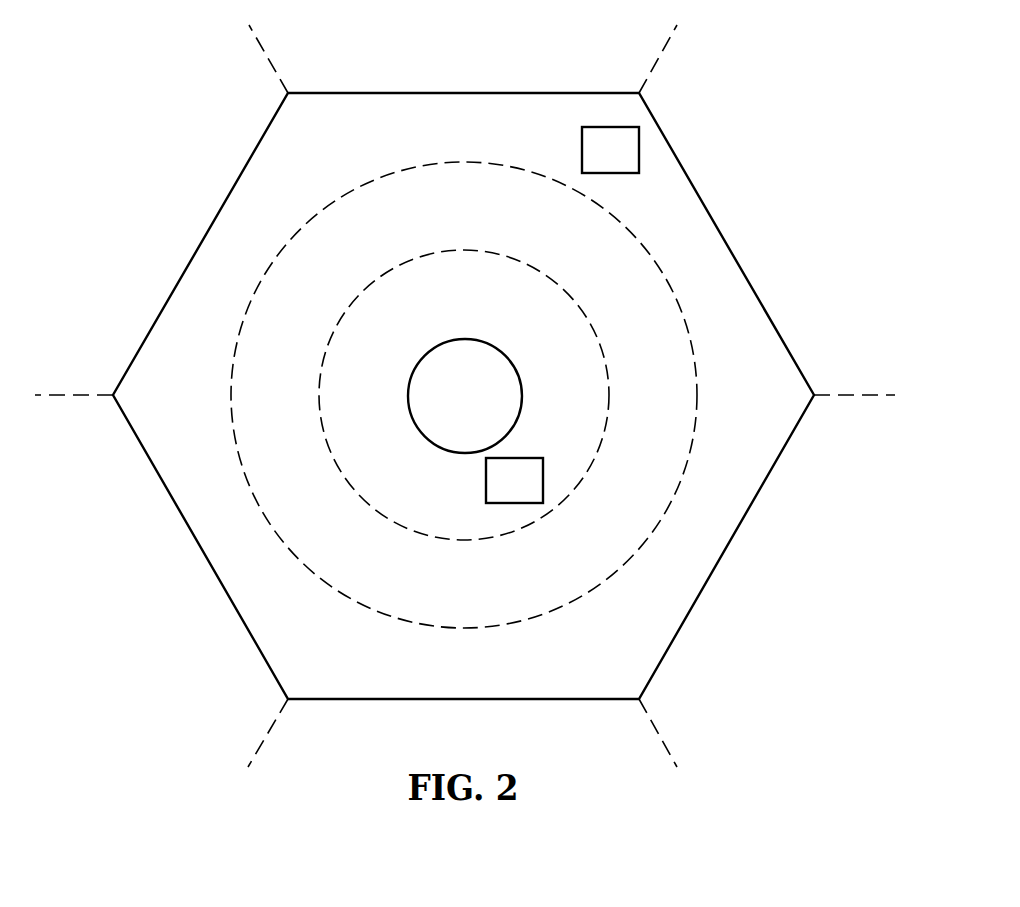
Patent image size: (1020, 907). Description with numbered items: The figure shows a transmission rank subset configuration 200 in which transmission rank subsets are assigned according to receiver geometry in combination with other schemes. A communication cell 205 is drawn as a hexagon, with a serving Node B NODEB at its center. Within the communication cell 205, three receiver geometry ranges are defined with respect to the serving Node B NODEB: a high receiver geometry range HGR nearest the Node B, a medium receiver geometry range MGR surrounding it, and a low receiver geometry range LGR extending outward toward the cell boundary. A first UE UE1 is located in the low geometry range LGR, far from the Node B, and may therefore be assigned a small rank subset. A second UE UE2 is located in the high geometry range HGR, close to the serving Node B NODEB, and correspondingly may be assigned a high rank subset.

The transmission rank subset configuration 200 is at (465, 396).
The communication cell 205 is at (203, 240).
The low receiver geometry range LGR is at (464, 371).
The medium receiver geometry range MGR is at (464, 367).
The high receiver geometry range HGR is at (462, 295).
The serving Node B NODEB is at (465, 396).
The first UE UE1 is at (610, 150).
The second UE UE2 is at (514, 480).